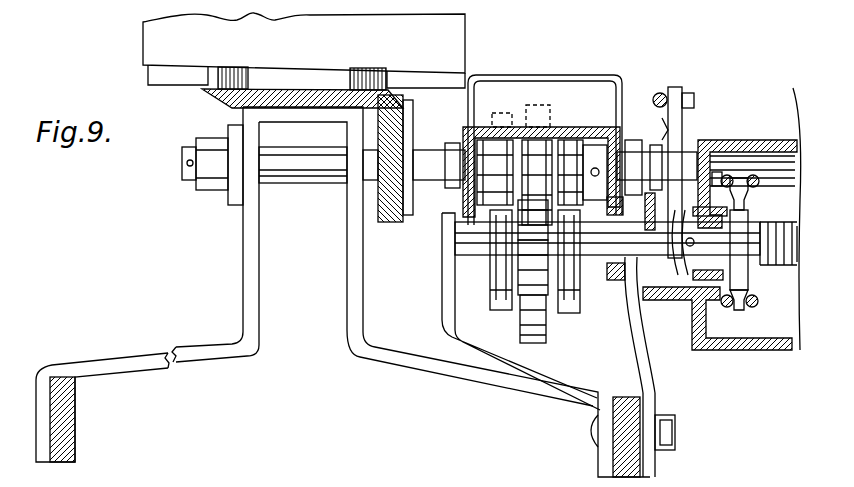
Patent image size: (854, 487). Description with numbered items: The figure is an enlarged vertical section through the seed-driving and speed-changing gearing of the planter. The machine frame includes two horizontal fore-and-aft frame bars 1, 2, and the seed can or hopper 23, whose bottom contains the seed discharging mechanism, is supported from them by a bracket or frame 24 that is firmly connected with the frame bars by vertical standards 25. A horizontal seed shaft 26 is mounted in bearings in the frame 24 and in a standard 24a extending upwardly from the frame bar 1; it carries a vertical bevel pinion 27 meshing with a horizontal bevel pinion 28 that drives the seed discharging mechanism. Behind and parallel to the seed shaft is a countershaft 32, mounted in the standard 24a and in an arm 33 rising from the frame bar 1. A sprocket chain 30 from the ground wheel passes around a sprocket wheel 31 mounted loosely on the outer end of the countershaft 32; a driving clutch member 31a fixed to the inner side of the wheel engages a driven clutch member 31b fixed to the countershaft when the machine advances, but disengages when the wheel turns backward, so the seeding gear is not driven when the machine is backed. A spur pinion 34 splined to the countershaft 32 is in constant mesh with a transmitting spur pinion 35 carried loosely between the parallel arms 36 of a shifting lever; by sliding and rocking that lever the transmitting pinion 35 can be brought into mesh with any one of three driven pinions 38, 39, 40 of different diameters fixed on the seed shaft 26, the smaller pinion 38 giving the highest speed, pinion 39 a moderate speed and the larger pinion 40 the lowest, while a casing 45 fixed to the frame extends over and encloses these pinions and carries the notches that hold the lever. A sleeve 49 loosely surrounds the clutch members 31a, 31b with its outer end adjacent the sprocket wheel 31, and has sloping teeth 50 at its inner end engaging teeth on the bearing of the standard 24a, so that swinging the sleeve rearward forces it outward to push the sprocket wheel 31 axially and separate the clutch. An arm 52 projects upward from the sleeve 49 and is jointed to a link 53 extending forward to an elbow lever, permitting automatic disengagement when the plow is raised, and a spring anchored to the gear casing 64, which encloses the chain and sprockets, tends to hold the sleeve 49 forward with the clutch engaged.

The frame bar 1 is at (600, 452).
The frame bar 2 is at (80, 433).
The seed can or hopper 23 is at (304, 50).
The bracket or frame 24 is at (243, 292).
The standard 24a is at (645, 355).
The vertical standards 25 is at (347, 298).
The seed shaft 26 is at (318, 172).
The vertical bevel pinion 27 is at (386, 225).
The horizontal bevel pinion 28 is at (208, 98).
The sprocket chain 30 is at (752, 178).
The sprocket wheel 31 is at (793, 100).
The driving clutch member 31a is at (740, 250).
The driven clutch member 31b is at (716, 170).
The countershaft 32 is at (468, 250).
The arm 33 is at (520, 250).
The spur pinion 34 is at (530, 292).
The transmitting spur pinion 35 is at (536, 338).
The parallel arms 36 is at (492, 300).
The driven pinion 38 is at (500, 140).
The driven pinion 39 is at (533, 140).
The driven pinion 40 is at (570, 140).
The casing 45 is at (612, 78).
The sleeve 49 is at (672, 282).
The sloping teeth 50 is at (631, 236).
The arm 52 is at (668, 128).
The link 53 is at (688, 94).
The gear casing 64 is at (740, 350).